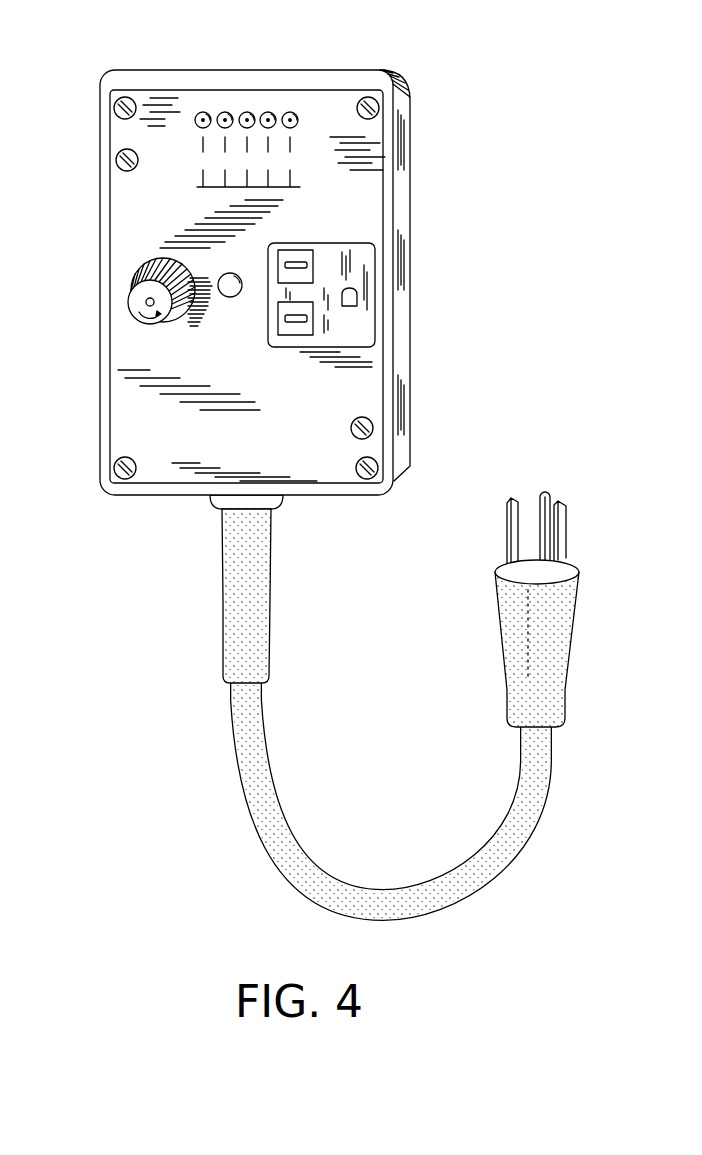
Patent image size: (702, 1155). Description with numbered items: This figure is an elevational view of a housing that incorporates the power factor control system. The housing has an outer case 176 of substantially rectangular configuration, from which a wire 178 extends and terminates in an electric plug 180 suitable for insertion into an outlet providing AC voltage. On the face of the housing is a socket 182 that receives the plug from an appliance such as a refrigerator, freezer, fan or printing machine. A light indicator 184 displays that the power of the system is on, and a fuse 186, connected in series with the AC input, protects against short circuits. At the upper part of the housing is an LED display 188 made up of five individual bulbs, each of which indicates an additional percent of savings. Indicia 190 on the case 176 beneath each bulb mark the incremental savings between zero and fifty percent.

The outer case 176 is at (420, 262).
The wire 178 is at (258, 720).
The electric plug 180 is at (577, 605).
The socket 182 is at (360, 331).
The light indicator 184 is at (202, 305).
The fuse 186 is at (128, 300).
The LED display 188 is at (203, 112).
The indicia 190 is at (197, 158).